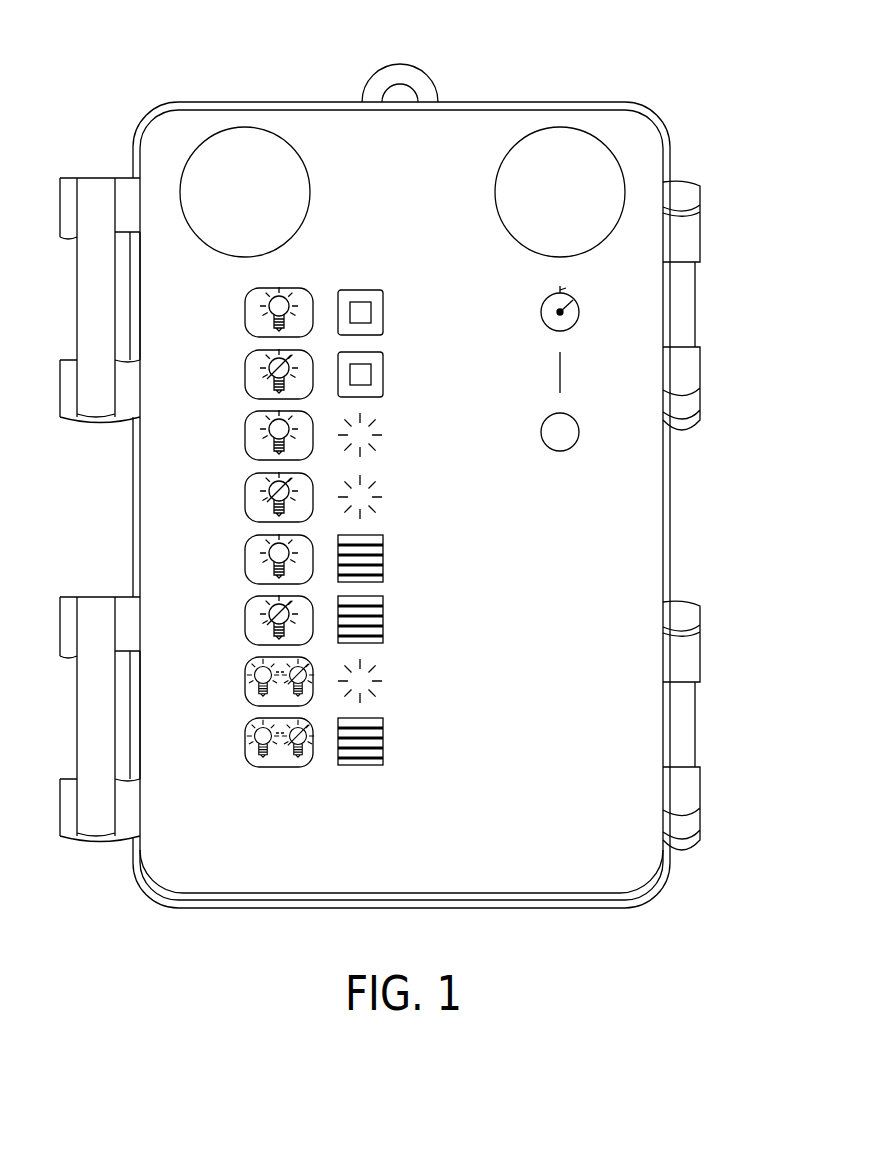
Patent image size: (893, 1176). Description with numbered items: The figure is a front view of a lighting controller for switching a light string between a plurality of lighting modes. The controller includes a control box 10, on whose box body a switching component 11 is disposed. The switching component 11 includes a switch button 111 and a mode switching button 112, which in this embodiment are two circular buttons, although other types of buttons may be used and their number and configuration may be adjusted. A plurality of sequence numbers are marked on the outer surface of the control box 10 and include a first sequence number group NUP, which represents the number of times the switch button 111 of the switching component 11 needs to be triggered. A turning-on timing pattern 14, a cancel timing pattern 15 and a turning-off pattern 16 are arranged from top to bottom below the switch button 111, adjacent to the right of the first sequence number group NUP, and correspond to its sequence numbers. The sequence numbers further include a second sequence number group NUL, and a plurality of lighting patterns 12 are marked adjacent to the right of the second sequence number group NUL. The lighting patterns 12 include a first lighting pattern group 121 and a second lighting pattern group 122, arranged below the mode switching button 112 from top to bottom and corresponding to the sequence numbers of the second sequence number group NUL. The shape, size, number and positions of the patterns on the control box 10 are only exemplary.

The control box 10 is at (632, 247).
The switching component 11 is at (402, 128).
The switch button 111 is at (560, 143).
The mode switching button 112 is at (257, 153).
The lighting patterns 12 is at (277, 581).
The first lighting pattern group 121 is at (280, 765).
The second lighting pattern group 122 is at (359, 559).
The turning-on timing pattern 14 is at (580, 312).
The cancel timing pattern 15 is at (561, 372).
The turning-off pattern 16 is at (580, 432).
The second sequence number group NUL is at (203, 764).
The first sequence number group NUP is at (503, 458).